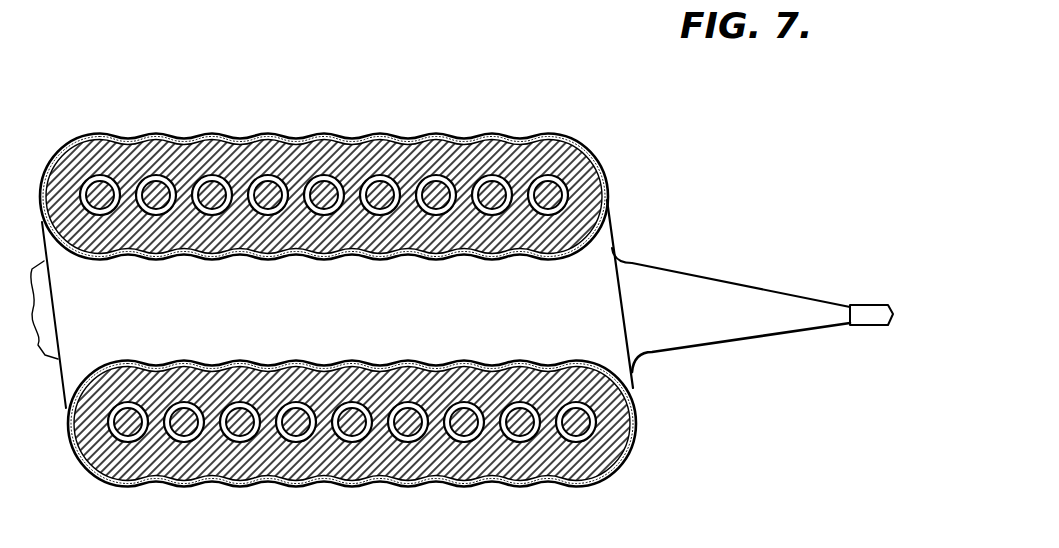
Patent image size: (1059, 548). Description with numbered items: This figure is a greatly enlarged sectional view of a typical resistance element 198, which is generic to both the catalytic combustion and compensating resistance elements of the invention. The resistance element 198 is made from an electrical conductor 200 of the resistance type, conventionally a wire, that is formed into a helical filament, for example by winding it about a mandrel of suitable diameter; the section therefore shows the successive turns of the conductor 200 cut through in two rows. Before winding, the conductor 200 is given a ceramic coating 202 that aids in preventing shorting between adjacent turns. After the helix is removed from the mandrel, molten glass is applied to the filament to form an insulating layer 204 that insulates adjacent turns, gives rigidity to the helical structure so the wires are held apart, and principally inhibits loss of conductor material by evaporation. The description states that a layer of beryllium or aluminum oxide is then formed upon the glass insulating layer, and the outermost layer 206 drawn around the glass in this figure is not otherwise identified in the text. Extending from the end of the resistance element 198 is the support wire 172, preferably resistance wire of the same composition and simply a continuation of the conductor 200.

The support wire 172 is at (873, 303).
The resistance element 198 is at (632, 211).
The conductor 200 is at (152, 207).
The ceramic coating 202 is at (108, 180).
The insulating layer 204 is at (62, 165).
The outer sheath 206 is at (97, 132).